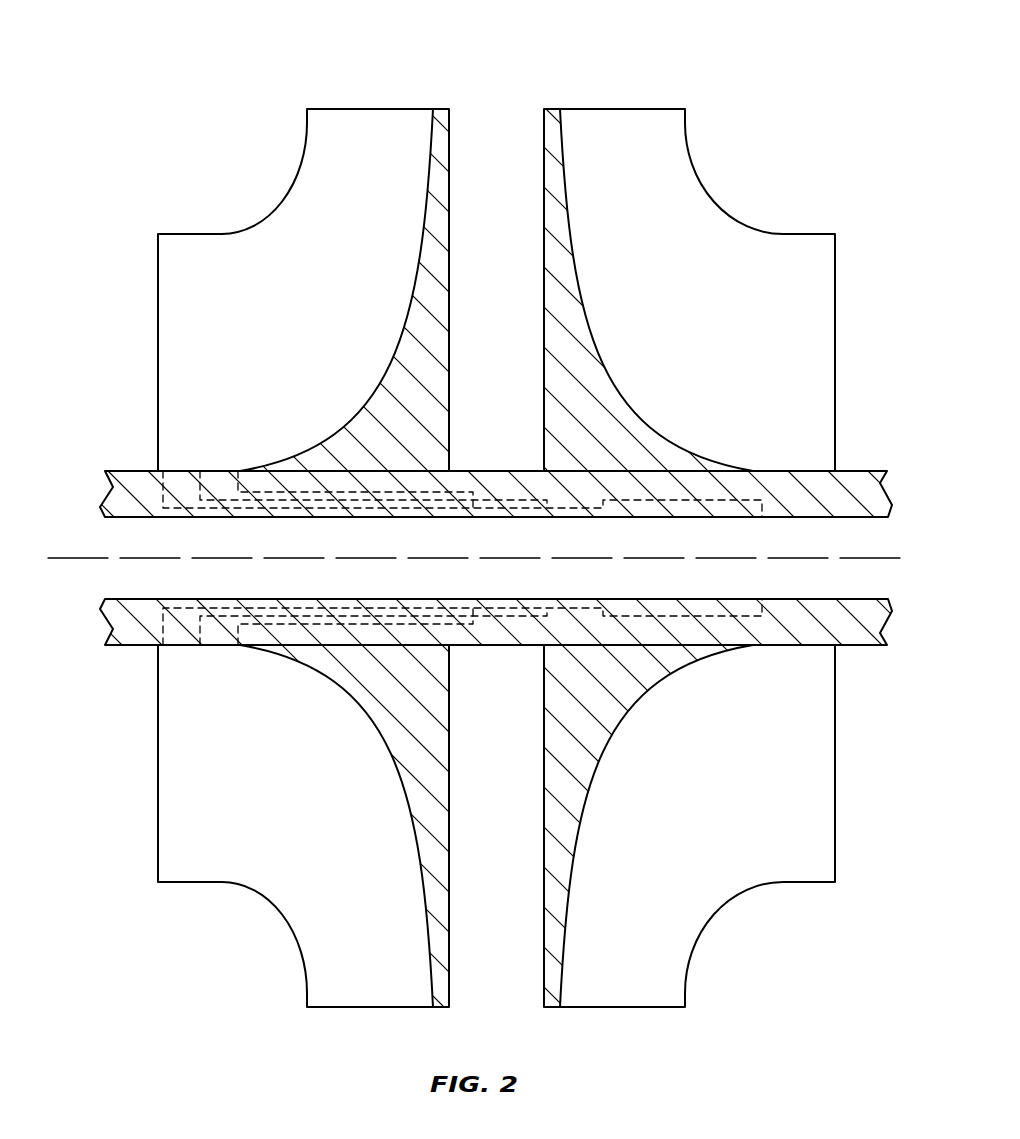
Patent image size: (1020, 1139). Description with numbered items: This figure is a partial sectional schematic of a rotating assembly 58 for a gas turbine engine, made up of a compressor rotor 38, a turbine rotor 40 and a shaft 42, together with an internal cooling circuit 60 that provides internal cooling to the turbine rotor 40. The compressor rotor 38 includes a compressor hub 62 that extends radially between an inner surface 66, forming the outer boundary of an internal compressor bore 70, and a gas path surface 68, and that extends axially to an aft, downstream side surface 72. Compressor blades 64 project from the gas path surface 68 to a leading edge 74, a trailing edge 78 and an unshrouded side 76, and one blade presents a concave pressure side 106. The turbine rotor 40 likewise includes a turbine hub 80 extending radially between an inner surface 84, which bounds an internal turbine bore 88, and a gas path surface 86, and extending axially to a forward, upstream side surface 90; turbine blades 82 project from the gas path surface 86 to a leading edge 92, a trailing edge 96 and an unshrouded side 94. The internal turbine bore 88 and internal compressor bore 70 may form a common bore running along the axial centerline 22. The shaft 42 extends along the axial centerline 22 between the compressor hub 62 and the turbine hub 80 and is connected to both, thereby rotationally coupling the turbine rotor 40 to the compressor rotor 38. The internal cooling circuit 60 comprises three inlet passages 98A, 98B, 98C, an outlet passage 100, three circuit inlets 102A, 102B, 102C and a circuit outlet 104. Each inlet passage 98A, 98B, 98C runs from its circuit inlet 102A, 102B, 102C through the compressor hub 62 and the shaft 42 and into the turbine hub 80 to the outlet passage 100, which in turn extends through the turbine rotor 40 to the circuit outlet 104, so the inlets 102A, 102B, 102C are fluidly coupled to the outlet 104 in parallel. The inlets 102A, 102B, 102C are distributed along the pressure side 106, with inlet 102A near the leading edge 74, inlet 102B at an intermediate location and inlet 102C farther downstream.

The axial centerline 22 is at (50, 560).
The compressor rotor 38 is at (421, 104).
The turbine rotor 40 is at (566, 104).
The shaft 42 is at (497, 462).
The rotating assembly 58 is at (148, 78).
The internal cooling circuit 60 is at (526, 518).
The compressor hub 62 is at (230, 525).
The compressor blade 64 is at (262, 207).
The inner surface of the compressor hub 66 is at (185, 518).
The gas path surface of the compressor hub 68 is at (294, 458).
The internal compressor bore 70 is at (276, 592).
The downstream side surface of the compressor hub 72 is at (450, 244).
The leading edge of the compressor blade 74 is at (158, 327).
The side of the compressor blade 76 is at (218, 232).
The trailing edge of the compressor blade 78 is at (357, 108).
The turbine hub 80 is at (797, 520).
The turbine blade 82 is at (724, 192).
The inner surface of the turbine hub 84 is at (678, 518).
The gas path surface of the turbine hub 86 is at (707, 458).
The internal turbine bore 88 is at (739, 590).
The upstream side surface of the turbine hub 90 is at (543, 247).
The leading edge of the turbine blade 92 is at (637, 108).
The side of the turbine blade 94 is at (693, 149).
The trailing edge of the turbine blade 96 is at (836, 326).
The cooling circuit inlet passage 98A is at (343, 518).
The cooling circuit inlet passage 98B is at (385, 518).
The cooling circuit inlet passage 98C is at (472, 518).
The cooling circuit outlet passage 100 is at (600, 518).
The cooling circuit inlet 102A is at (163, 470).
The cooling circuit inlet 102B is at (200, 470).
The cooling circuit inlet 102C is at (240, 470).
The cooling circuit outlet 104 is at (762, 518).
The side of the compressor blade 106 is at (341, 335).